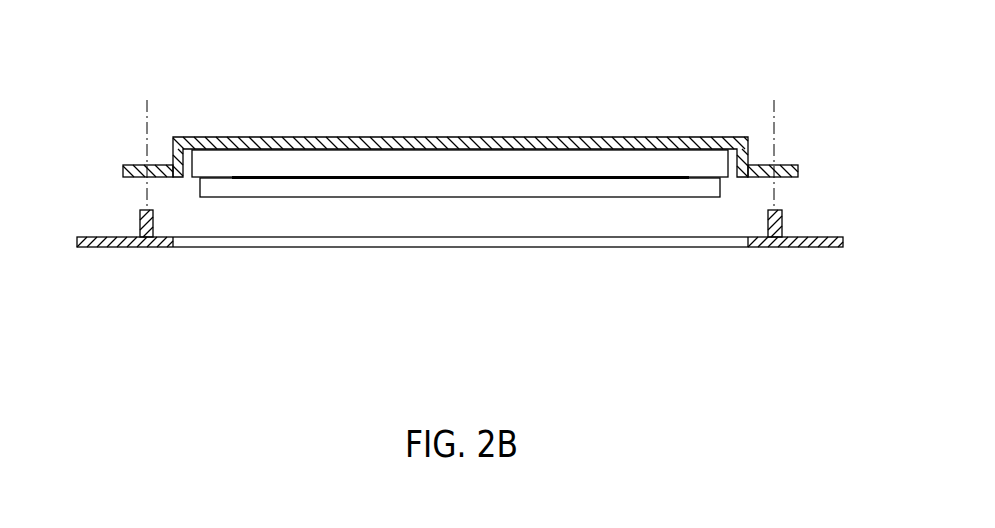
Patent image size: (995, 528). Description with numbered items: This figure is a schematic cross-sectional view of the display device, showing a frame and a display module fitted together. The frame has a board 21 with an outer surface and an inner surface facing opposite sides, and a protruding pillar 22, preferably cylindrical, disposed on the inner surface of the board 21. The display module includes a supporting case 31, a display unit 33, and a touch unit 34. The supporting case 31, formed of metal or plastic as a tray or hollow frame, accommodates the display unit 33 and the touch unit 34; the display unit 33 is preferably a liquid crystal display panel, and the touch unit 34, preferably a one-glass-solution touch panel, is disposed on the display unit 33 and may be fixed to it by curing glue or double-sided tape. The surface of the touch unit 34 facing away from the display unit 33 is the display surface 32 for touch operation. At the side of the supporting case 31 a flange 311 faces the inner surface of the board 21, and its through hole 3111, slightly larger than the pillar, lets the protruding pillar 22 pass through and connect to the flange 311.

The board 21 is at (76, 241).
The protruding pillar 22 is at (140, 223).
The supporting case 31 is at (237, 143).
The flange 311 is at (113, 168).
The through hole 3111 is at (146, 164).
The display surface 32 is at (482, 199).
The display unit 33 is at (533, 155).
The touch unit 34 is at (443, 190).